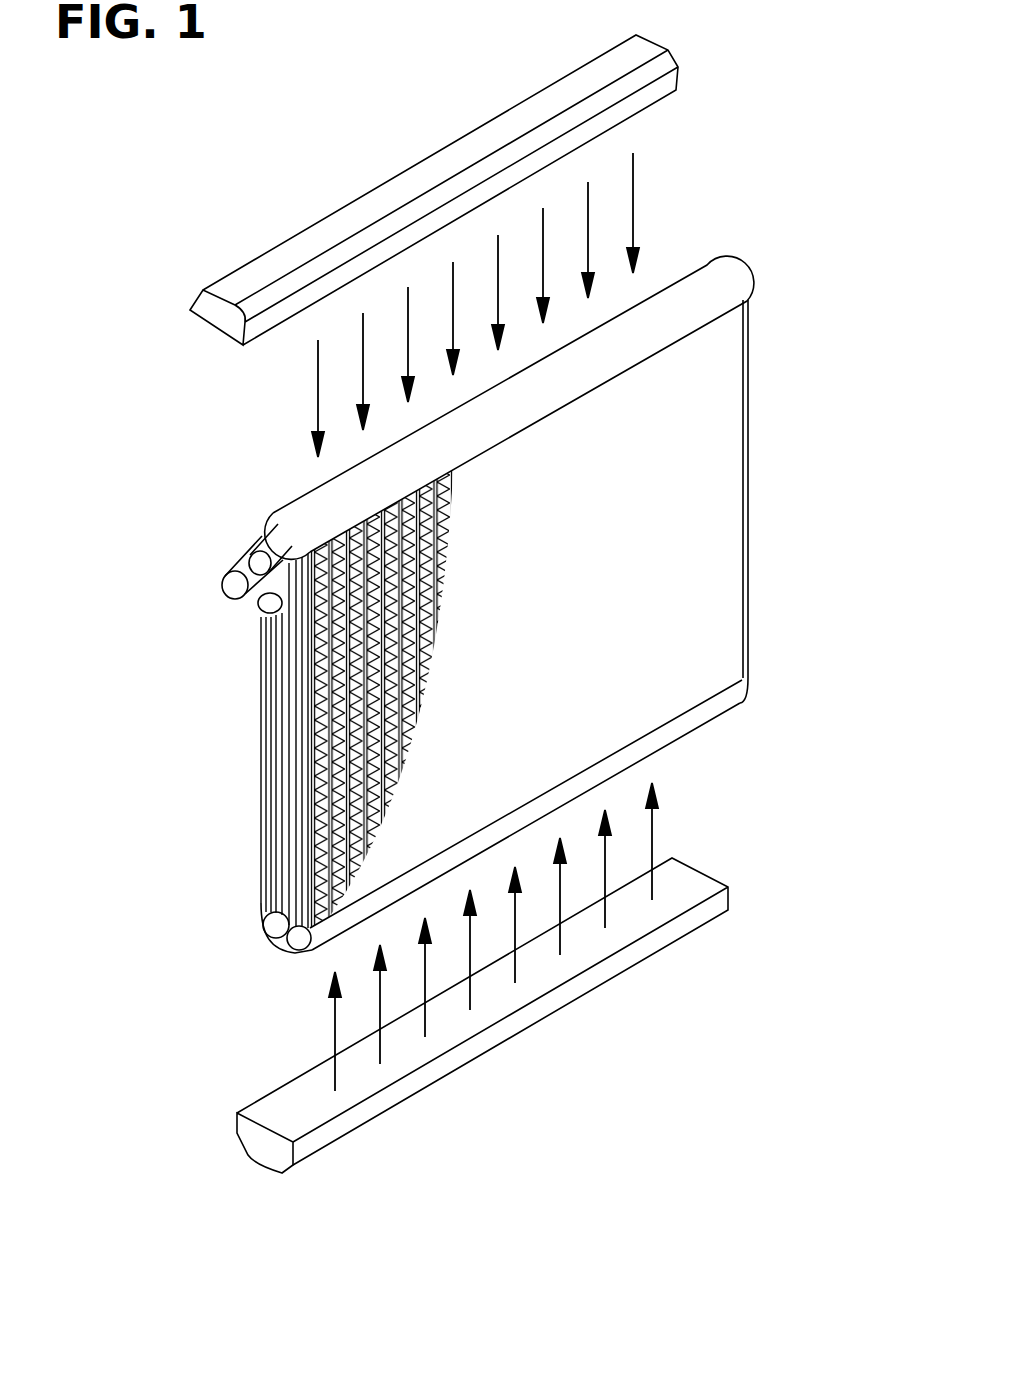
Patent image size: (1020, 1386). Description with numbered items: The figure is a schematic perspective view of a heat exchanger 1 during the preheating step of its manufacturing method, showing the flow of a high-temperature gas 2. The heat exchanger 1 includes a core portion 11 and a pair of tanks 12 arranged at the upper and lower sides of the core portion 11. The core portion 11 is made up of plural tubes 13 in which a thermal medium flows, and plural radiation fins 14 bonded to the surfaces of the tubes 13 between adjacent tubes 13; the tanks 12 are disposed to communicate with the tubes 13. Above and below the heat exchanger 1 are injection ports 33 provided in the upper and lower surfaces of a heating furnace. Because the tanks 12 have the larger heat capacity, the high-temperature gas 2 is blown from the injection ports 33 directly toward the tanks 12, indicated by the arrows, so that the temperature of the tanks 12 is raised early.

The heat exchanger 1 is at (522, 587).
The high-temperature gas 2 is at (453, 290).
The core portion 11 is at (678, 476).
The tank 12 is at (680, 278).
The tube 13 is at (312, 842).
The radiation fin 14 is at (315, 718).
The injection port 33 is at (295, 253).